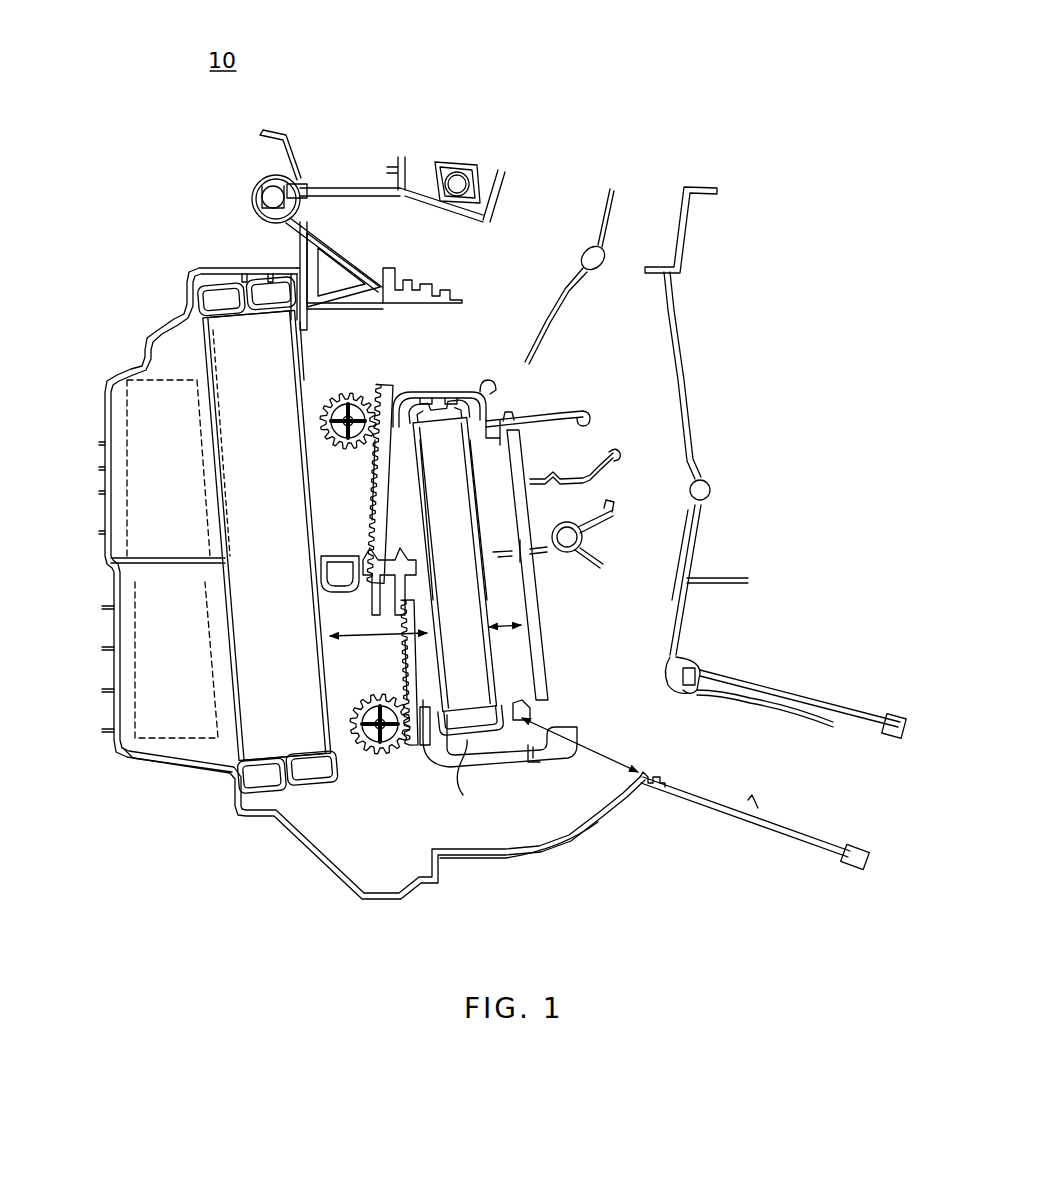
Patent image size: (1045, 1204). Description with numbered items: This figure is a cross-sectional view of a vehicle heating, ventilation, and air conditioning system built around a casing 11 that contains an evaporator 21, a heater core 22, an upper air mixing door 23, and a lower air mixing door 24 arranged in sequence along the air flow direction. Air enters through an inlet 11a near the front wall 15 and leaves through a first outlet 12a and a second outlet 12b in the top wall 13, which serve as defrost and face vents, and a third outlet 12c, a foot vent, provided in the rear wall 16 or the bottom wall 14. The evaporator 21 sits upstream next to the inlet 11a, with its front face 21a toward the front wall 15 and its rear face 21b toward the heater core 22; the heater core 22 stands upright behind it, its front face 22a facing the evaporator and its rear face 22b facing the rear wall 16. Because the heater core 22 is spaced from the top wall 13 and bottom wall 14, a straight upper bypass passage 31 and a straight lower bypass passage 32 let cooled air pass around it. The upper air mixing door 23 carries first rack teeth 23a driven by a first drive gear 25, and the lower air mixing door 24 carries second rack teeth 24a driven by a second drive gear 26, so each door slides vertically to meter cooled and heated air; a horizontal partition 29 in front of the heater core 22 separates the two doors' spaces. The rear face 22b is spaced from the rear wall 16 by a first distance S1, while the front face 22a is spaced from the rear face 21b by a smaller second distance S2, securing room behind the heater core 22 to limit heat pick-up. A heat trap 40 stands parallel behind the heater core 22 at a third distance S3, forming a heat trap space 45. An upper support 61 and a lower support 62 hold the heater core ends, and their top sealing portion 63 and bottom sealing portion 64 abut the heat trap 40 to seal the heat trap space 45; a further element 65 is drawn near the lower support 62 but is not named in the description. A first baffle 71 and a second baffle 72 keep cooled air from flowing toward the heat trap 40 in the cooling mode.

The casing 11 is at (375, 583).
The inlet 11a is at (147, 748).
The first outlet 12a is at (553, 214).
The second outlet 12b is at (658, 222).
The third outlet 12c is at (855, 790).
The top wall 13 is at (240, 262).
The bottom wall 14 is at (507, 858).
The front wall 15 is at (102, 518).
The rear wall 16 is at (697, 440).
The evaporator 21 is at (248, 587).
The front face 21a is at (212, 490).
The rear face 21b is at (310, 372).
The heater core 22 is at (469, 567).
The front face 22a is at (420, 517).
The rear face 22b is at (485, 515).
The upper air mixing door 23 is at (375, 461).
The first rack teeth 23a is at (372, 490).
The lower air mixing door 24 is at (394, 709).
The second rack teeth 24a is at (404, 650).
The first drive gear 25 is at (349, 393).
The second drive gear 26 is at (379, 756).
The partition 29 is at (350, 598).
The upper bypass passage 31 is at (415, 334).
The lower bypass passage 32 is at (507, 814).
The heat trap 40 is at (542, 635).
The heat trap space 45 is at (506, 592).
The upper support 61 is at (474, 390).
The lower support 62 is at (463, 796).
The top sealing portion 63 is at (493, 440).
The bottom sealing portion 64 is at (536, 718).
The lower stopper 65 is at (536, 750).
The first baffle 71 is at (551, 410).
The second baffle 72 is at (603, 471).
The first distance S1 is at (580, 748).
The second distance S2 is at (378, 648).
The third distance S3 is at (505, 612).